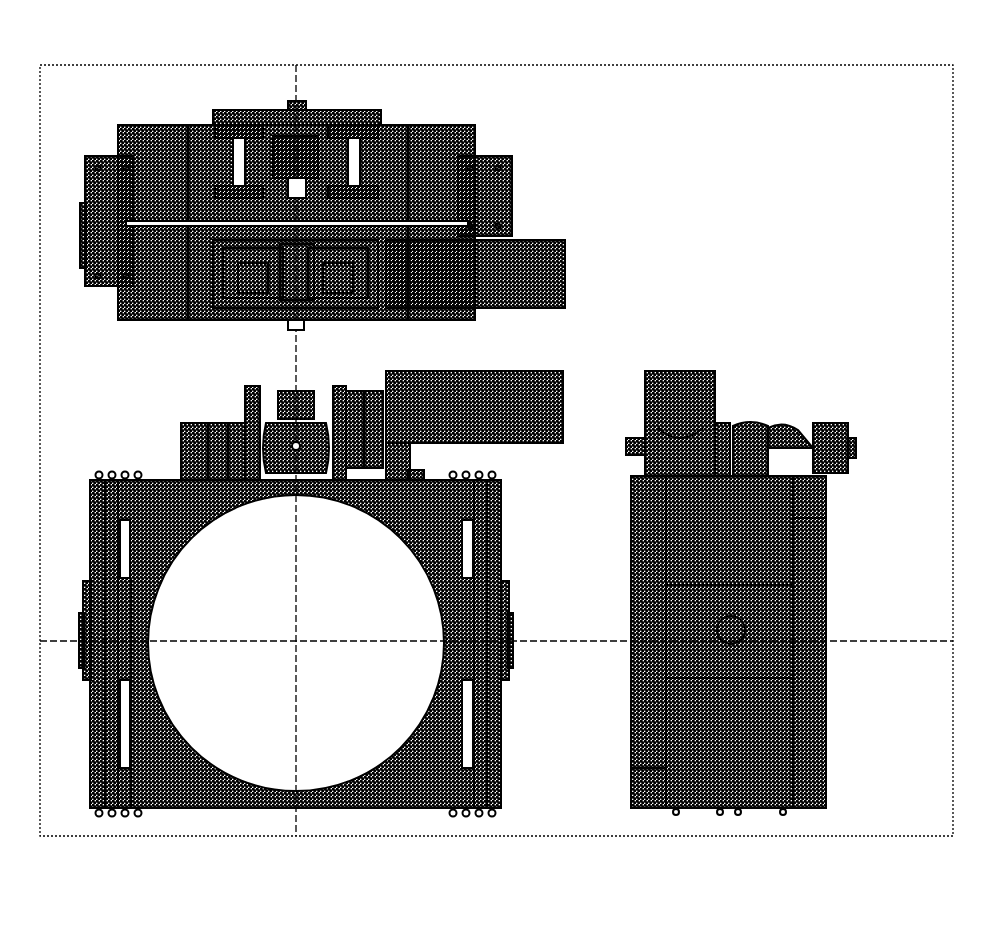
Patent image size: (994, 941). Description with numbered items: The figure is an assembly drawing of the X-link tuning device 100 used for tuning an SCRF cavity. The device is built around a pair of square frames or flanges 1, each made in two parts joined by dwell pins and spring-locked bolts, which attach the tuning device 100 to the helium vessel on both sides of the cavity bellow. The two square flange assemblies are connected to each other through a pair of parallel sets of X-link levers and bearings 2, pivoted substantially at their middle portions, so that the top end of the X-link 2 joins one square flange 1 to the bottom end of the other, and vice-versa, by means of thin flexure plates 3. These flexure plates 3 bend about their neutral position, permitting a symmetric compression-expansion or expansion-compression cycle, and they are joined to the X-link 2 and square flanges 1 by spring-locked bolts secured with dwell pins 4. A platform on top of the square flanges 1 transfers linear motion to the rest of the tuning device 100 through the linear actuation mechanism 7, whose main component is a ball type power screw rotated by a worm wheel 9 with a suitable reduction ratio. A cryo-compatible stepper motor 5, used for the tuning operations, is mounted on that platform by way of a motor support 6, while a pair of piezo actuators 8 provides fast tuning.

The X-link tuning device 100 is at (694, 42).
The square frames or flanges 1 is at (410, 712).
The X-link levers and bearings 2 is at (738, 650).
The flexure plates 3 is at (498, 150).
The dwell pins 4 is at (456, 809).
The stepper motor 5 is at (557, 252).
The motor support 6 is at (252, 378).
The linear actuation mechanism 7 is at (305, 120).
The piezo actuators 8 is at (215, 120).
The worm wheel 9 is at (232, 412).